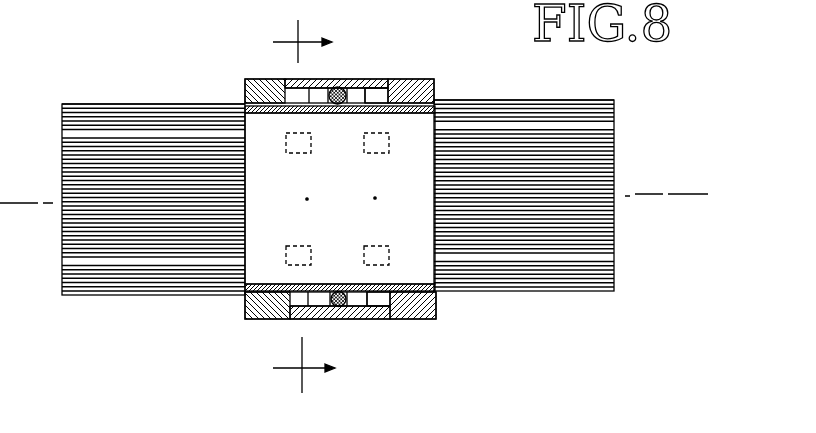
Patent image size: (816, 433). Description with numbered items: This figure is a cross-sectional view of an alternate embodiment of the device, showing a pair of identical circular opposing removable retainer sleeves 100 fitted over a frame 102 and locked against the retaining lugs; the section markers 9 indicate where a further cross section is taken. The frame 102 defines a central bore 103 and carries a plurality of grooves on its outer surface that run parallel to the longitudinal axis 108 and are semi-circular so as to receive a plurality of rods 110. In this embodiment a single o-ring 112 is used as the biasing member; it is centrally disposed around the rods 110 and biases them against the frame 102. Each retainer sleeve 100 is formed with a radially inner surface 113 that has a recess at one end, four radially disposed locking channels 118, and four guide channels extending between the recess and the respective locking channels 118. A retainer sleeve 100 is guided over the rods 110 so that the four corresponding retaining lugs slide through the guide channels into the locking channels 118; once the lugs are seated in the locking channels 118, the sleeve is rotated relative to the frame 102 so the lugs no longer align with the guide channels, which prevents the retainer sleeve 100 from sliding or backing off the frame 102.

The section line 9- 9 is at (304, 205).
The removable retainer sleeve 100 is at (416, 78).
The frame 102 is at (428, 263).
The bore 103 is at (264, 252).
The longitudinal axis 108 is at (670, 193).
The rod 110 is at (612, 291).
The o-ring 112 is at (355, 80).
The radially inner surface 113 is at (354, 186).
The locking channel 118 is at (385, 80).